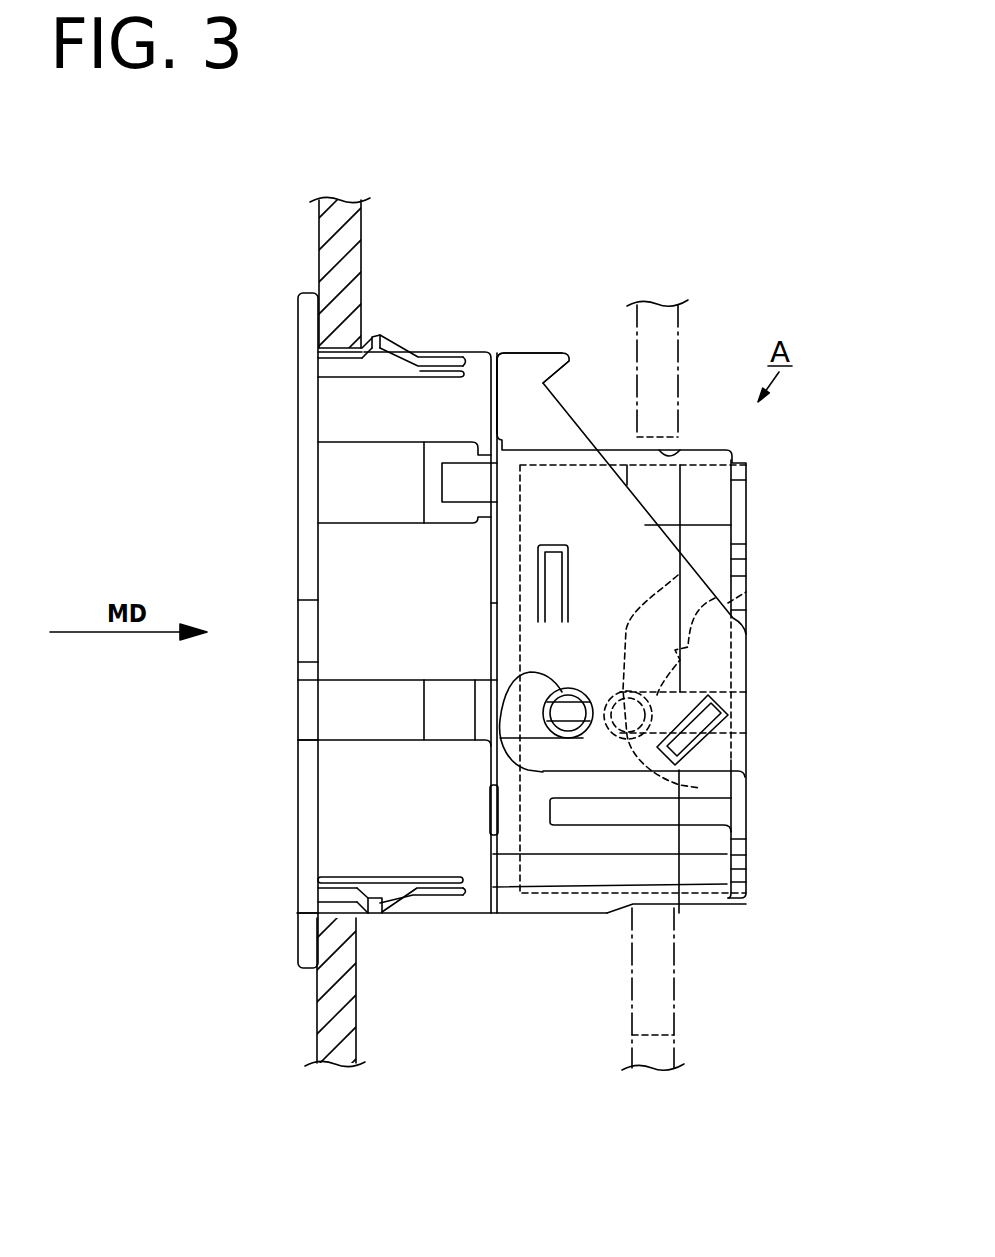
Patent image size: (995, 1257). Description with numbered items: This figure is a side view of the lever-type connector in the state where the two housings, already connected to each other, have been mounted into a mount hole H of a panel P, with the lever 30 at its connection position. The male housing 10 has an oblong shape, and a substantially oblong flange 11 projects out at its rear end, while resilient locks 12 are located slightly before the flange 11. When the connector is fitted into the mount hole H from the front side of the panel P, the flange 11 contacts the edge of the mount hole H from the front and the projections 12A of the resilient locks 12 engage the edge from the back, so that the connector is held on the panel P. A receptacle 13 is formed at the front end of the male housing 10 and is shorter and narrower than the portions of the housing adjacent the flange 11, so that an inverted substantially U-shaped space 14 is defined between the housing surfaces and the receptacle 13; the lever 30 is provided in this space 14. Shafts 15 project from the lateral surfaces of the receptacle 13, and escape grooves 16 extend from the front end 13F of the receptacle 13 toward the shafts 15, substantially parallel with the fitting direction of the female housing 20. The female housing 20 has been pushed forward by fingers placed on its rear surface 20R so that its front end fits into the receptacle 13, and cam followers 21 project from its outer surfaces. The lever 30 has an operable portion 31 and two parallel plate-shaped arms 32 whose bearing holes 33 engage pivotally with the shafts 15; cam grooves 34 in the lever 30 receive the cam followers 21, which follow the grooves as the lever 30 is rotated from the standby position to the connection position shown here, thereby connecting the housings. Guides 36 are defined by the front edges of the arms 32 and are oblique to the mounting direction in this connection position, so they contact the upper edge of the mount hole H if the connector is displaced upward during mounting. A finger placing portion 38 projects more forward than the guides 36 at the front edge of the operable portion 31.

The male housing 10 is at (443, 825).
The flange 11 is at (303, 960).
The resilient locks 12 is at (433, 362).
The projections 12A is at (378, 334).
The receptacle 13 is at (584, 873).
The front end of the receptacle 13F is at (748, 872).
The space 14 is at (505, 394).
The shafts 15 is at (562, 723).
The escape grooves 16 is at (746, 686).
The female housing 20 is at (723, 813).
The rear surface 20R is at (748, 820).
The cam followers 21 is at (700, 788).
The lever 30 is at (586, 339).
The operable portion 31 is at (509, 360).
The arms 32 is at (597, 584).
The bearing holes 33 is at (502, 712).
The cam grooves 34 is at (683, 657).
The guides 36 is at (645, 518).
The finger placing portion 38 is at (557, 360).
The panel P is at (342, 210).
The mount hole H is at (342, 352).